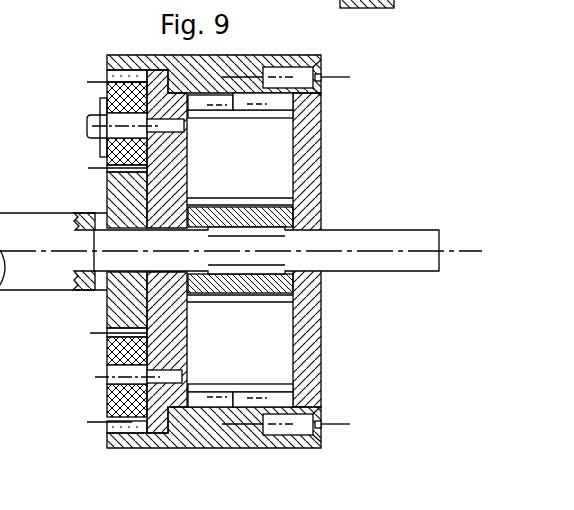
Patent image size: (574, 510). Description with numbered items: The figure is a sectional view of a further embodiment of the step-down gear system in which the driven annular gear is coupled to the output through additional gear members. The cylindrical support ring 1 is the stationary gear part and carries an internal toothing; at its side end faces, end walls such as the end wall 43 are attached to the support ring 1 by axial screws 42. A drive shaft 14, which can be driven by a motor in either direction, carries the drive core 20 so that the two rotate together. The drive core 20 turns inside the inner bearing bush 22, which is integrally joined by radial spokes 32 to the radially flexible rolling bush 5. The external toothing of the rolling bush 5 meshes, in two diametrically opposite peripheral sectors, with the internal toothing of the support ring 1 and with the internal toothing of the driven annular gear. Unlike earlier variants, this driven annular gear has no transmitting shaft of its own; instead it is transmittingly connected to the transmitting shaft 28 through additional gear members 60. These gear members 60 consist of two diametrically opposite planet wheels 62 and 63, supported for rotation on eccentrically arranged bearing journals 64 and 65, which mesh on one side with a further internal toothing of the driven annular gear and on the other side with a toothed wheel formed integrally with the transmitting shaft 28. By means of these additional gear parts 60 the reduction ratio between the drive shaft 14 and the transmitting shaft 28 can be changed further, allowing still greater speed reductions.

The support ring 1 is at (246, 53).
The rolling bush 5 is at (285, 116).
The drive shaft 14 is at (387, 237).
The drive core 20 is at (320, 281).
The inner bearing bush 22 is at (293, 303).
The transmitting shaft 28 is at (23, 225).
The spokes 32 is at (287, 168).
The axial screws 42 is at (322, 61).
The end wall 43 is at (312, 112).
The additional gear members 60 is at (100, 162).
The planet wheel 62 is at (128, 97).
The planet wheel 63 is at (118, 401).
The bearing journal 64 is at (120, 133).
The bearing journal 65 is at (118, 372).